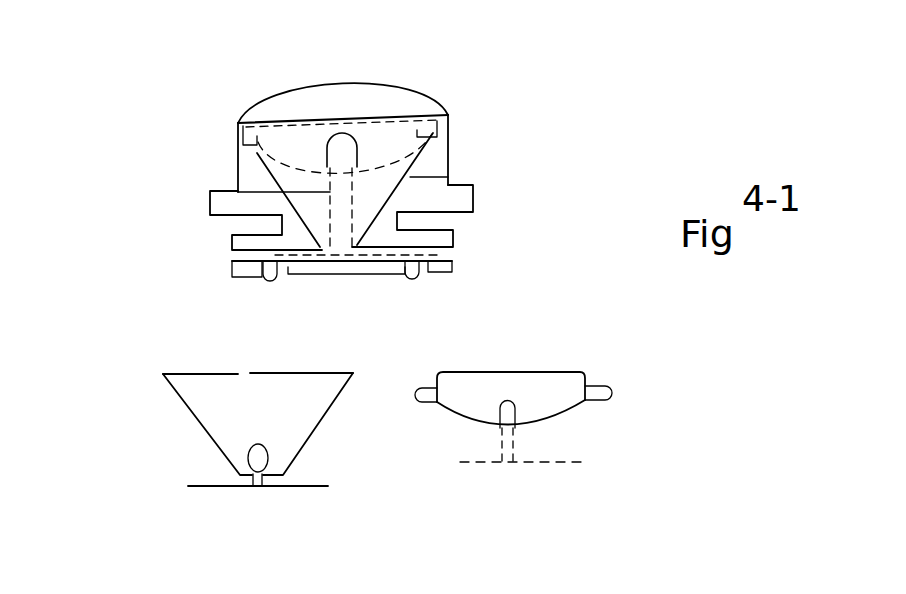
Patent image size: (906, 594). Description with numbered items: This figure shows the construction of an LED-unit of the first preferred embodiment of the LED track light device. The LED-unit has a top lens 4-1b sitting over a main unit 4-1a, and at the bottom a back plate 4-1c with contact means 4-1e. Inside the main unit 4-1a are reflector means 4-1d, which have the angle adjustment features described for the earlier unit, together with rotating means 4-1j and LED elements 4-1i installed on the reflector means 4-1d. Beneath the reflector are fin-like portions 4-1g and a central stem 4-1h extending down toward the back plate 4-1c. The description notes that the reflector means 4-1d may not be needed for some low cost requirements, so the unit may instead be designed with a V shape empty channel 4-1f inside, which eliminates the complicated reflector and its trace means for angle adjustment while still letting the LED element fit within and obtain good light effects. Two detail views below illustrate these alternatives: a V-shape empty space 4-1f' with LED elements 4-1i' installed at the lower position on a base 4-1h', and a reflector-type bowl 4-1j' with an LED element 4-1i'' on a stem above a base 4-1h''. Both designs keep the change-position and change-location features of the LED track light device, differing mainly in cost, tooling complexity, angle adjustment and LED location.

The main unit 4-1a is at (450, 158).
The top lens 4-1b is at (430, 97).
The back plate 4-1c is at (452, 268).
The reflector means 4-1d is at (267, 155).
The contact means 4-1e is at (403, 277).
The V shape empty channel 4-1f is at (455, 205).
The heat sink fins 4-1g is at (328, 192).
The stem and rail 4-1h is at (273, 224).
The LED elements 4-1i is at (297, 102).
The rotating means 4-1j is at (291, 109).
The reflector cone detail 4-1f' is at (201, 424).
The LED elements 4-1i' is at (318, 461).
The base detail 4-1h' is at (258, 511).
The bowl with ears detail 4-1j' is at (563, 398).
The light source cap detail 4-1i'' is at (579, 427).
The stem and base detail 4-1h'' is at (521, 478).